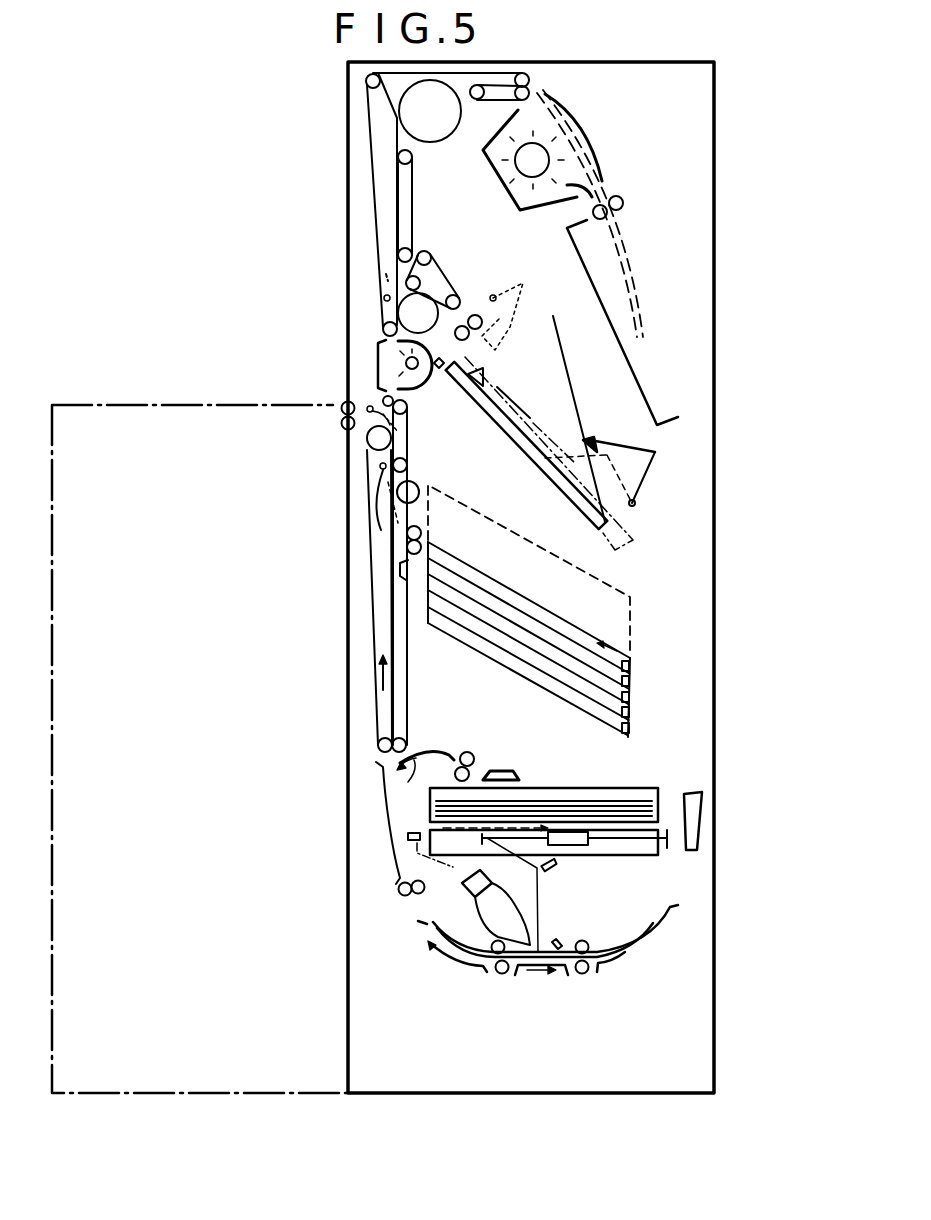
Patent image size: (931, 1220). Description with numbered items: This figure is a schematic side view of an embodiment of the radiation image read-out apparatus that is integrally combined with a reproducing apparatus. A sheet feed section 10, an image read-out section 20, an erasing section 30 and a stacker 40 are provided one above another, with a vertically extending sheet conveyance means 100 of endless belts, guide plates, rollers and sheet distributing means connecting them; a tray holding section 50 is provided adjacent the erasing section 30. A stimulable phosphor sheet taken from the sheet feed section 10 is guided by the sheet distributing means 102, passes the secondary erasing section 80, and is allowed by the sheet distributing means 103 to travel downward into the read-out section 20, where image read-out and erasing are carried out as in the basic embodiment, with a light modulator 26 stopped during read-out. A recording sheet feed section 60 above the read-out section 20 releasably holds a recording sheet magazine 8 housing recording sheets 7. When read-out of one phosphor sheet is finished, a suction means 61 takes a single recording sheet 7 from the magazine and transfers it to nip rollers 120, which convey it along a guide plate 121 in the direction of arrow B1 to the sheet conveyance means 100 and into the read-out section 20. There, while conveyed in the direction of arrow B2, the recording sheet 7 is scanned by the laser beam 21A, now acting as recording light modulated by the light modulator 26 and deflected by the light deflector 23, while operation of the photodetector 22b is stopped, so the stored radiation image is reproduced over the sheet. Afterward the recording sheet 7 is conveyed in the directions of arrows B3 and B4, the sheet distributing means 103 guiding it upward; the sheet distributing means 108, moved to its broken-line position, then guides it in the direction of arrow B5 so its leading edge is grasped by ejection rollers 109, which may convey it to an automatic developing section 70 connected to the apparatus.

The recording sheet 7 is at (543, 803).
The recording sheet magazine 8 is at (662, 798).
The sheet feed section 10 is at (662, 506).
The image read-out section 20 is at (614, 915).
The laser beam 21A is at (638, 848).
The photodetector 22b is at (462, 890).
The light deflector 23 is at (543, 873).
The light modulator 26 is at (585, 847).
The erasing section 30 is at (500, 198).
The stacker 40 is at (660, 663).
The tray holding section 50 is at (676, 309).
The recording sheet feed section 60 is at (628, 765).
The suction means 61 is at (503, 768).
The automatic developing section 70 is at (208, 506).
The secondary erasing section 80 is at (436, 387).
The stimulable phosphor sheet conveyance means 100 is at (373, 133).
The sheet distributing means 102 is at (386, 288).
The sheet distributing means 103 is at (380, 491).
The sheet distributing means 108 is at (386, 410).
The ejection rollers 109 is at (340, 432).
The nip rollers 120 is at (479, 760).
The guide plate 121 is at (432, 750).
The arrow B1 is at (410, 784).
The arrow B2 is at (540, 972).
The arrow B3 is at (443, 960).
The arrow B4 is at (378, 672).
The arrow B5 is at (407, 438).